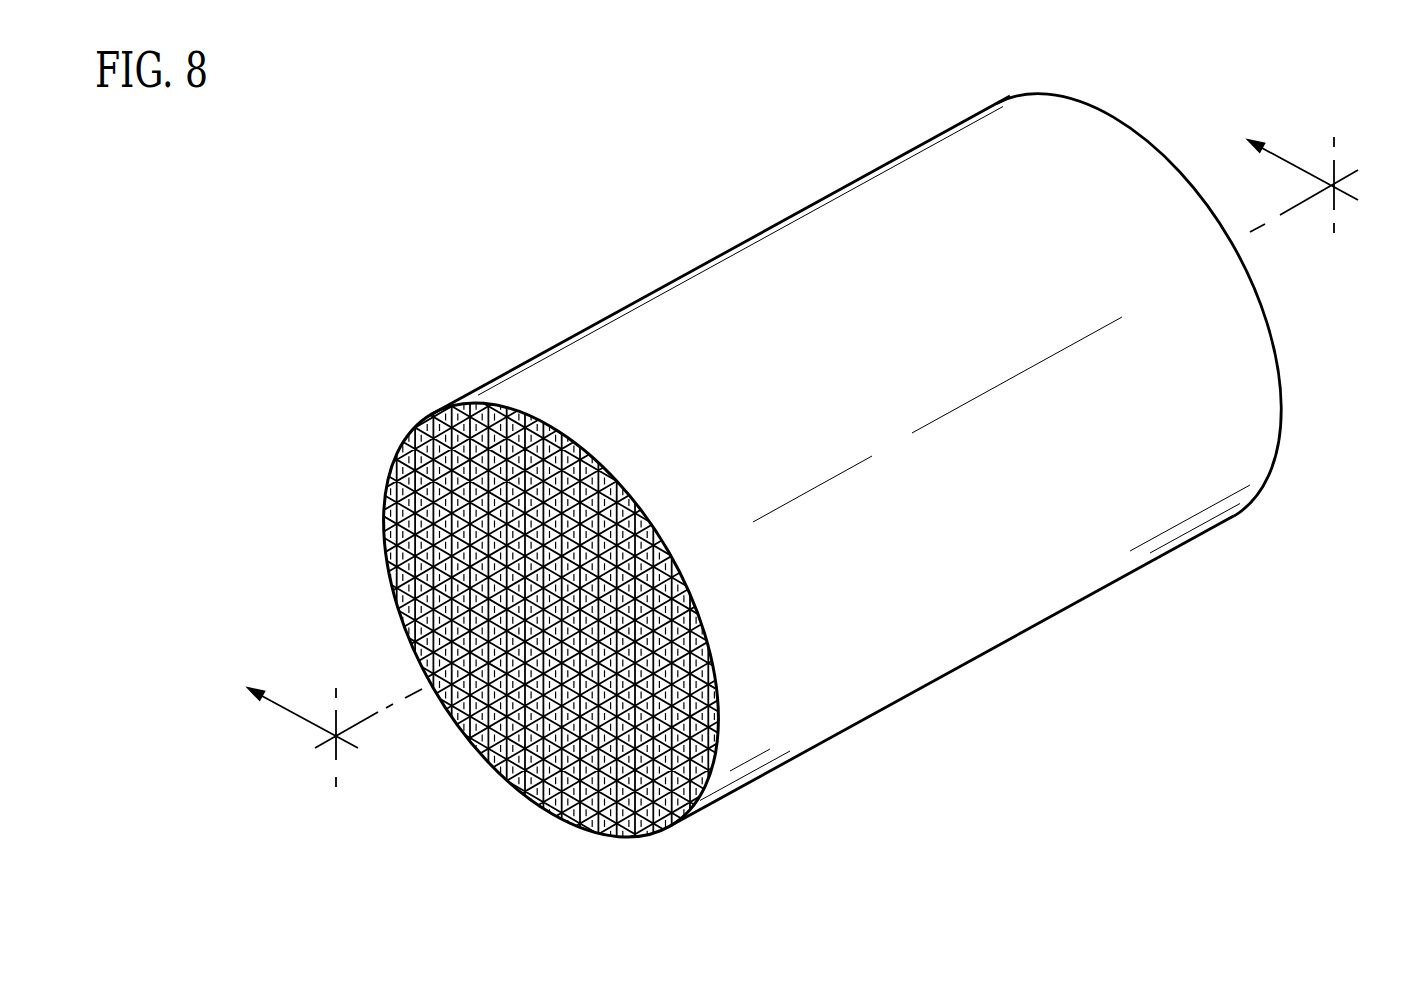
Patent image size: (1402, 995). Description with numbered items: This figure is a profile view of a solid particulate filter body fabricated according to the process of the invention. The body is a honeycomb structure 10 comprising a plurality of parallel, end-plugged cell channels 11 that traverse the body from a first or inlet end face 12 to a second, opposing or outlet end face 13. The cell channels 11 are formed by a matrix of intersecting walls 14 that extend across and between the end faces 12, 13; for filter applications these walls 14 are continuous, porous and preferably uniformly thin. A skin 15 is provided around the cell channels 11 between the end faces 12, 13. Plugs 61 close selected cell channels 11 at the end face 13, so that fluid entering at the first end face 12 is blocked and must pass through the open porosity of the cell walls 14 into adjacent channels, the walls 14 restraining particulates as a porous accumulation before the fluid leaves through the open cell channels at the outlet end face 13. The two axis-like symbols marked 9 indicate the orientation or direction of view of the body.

The axial direction 9 is at (812, 462).
The honeycomb structure 10 is at (641, 303).
The cell channels 11 is at (490, 428).
The first end face 12 is at (407, 450).
The second end face 13 is at (1140, 127).
The walls 14 is at (521, 567).
The skin 15 is at (741, 270).
The plugs 61 is at (392, 540).